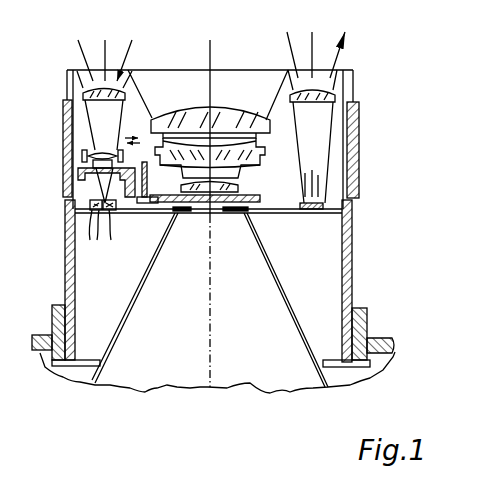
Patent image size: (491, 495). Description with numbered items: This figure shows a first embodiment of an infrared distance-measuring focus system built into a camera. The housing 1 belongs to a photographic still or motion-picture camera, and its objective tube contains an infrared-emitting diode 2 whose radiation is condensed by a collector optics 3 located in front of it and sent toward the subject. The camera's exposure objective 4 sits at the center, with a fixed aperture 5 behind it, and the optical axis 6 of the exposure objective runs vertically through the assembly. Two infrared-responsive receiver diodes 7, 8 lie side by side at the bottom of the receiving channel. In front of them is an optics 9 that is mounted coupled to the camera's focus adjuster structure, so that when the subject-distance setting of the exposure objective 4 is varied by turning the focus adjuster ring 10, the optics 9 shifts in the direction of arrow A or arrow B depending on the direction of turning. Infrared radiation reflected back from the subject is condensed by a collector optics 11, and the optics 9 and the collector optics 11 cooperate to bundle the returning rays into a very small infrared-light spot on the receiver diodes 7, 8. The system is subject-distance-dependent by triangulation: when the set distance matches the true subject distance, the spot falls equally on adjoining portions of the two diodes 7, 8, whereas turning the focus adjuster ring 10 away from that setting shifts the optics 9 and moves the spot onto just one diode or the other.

The housing 1 is at (332, 262).
The infrared-emitting diode 2 is at (312, 209).
The collector optics 3 is at (325, 97).
The exposure objective 4 is at (221, 117).
The fixed aperture 5 is at (215, 213).
The optical axis 6 is at (210, 298).
The receiver diode 7 is at (95, 213).
The receiver diode 8 is at (113, 213).
The optics 9 is at (97, 150).
The focus adjuster ring 10 is at (63, 122).
The collector optics 11 is at (85, 91).